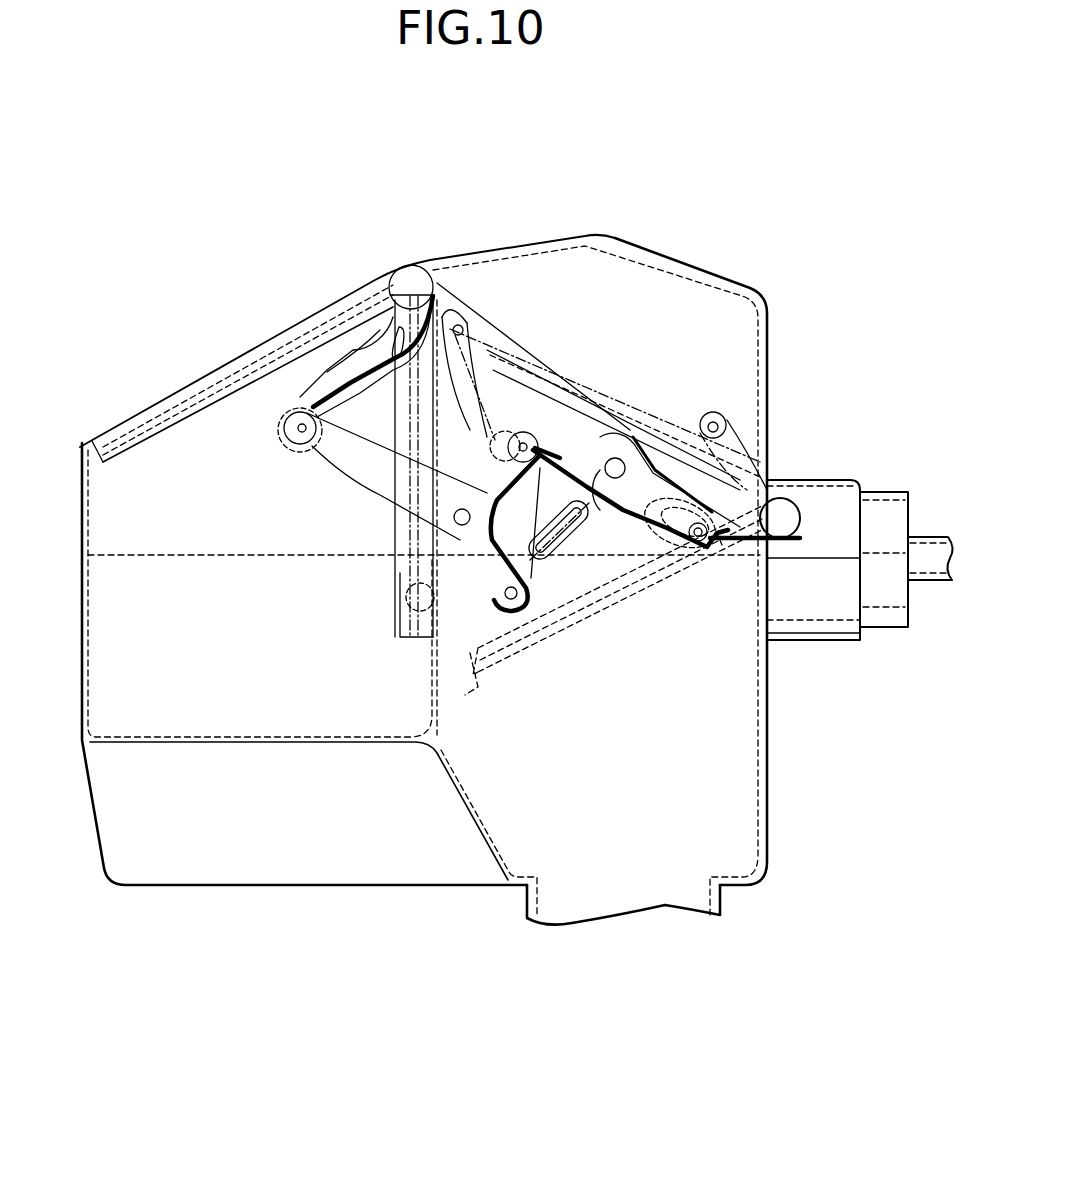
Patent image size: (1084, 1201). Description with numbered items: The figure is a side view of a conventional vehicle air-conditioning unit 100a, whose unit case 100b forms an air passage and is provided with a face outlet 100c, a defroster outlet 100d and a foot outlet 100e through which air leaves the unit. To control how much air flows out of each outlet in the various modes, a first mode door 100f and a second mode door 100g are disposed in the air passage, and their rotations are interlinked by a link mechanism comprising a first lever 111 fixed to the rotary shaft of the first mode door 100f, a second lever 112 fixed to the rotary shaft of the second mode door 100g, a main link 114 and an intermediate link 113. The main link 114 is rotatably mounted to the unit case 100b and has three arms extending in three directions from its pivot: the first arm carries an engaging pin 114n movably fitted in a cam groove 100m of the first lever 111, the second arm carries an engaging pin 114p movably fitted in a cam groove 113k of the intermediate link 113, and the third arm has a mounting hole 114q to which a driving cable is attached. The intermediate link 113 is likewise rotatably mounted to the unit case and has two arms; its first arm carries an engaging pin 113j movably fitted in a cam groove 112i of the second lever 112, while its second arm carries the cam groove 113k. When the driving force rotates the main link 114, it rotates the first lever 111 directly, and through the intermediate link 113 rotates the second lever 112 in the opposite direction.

The air-conditioning unit 100a is at (447, 190).
The unit case 100b is at (655, 250).
The face outlet 100c is at (198, 385).
The defroster outlet 100d is at (487, 255).
The foot outlet 100e is at (618, 908).
The first mode door 100f is at (180, 430).
The second mode door 100g is at (476, 683).
The guide rib 100m is at (323, 405).
The first lever 111 is at (320, 400).
The second lever 112 is at (825, 506).
The cam groove 112i is at (720, 553).
The intermediate link 113 is at (634, 487).
The engaging pin 113j is at (703, 548).
The cam groove 113k is at (575, 445).
The main link 114 is at (408, 502).
The engaging pin 114n is at (295, 423).
The engaging pin 114p is at (521, 437).
The mounting hole 114q is at (511, 595).